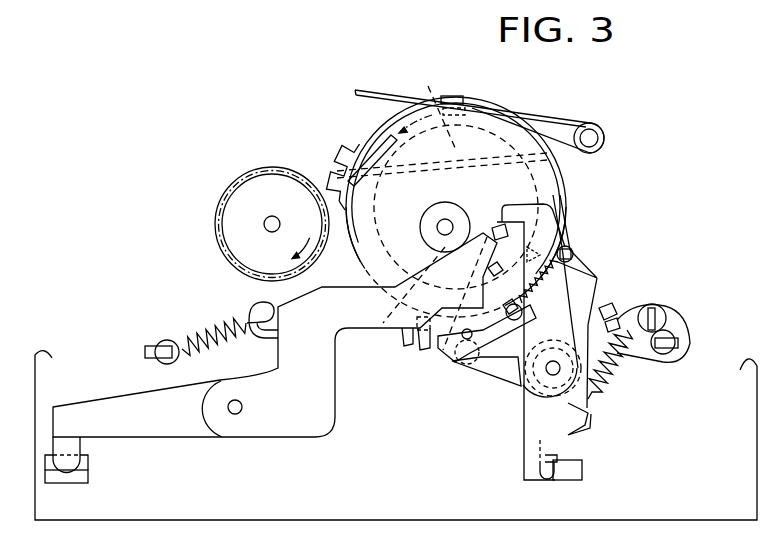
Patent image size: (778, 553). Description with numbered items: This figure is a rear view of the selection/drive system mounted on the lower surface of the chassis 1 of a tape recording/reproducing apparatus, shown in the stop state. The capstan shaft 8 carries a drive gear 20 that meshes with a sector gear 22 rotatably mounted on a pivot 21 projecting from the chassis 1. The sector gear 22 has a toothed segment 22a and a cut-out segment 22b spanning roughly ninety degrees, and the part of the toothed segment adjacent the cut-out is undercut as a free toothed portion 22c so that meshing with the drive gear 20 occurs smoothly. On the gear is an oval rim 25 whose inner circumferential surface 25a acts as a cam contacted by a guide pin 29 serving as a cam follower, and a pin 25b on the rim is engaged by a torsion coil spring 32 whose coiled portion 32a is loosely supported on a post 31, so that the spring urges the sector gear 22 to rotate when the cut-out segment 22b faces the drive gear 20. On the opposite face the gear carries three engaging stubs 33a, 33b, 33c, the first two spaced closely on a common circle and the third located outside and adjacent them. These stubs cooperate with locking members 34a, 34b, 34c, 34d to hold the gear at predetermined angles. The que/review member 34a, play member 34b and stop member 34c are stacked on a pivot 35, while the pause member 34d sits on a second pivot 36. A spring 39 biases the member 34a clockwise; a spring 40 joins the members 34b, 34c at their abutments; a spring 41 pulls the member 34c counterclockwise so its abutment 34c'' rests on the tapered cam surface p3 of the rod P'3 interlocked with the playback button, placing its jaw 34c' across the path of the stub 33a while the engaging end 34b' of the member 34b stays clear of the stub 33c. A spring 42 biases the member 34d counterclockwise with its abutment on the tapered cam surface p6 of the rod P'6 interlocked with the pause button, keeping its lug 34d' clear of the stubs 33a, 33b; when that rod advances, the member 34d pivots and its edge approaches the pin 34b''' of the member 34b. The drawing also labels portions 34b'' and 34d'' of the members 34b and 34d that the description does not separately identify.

The chassis 1 is at (724, 506).
The capstan shaft 8 is at (268, 222).
The drive gear 20 is at (222, 252).
The pivot 21 is at (448, 225).
The sector gear 22 is at (495, 142).
The toothed segment 22a is at (567, 196).
The cut-out segment 22b is at (373, 222).
The free toothed portion 22c is at (341, 155).
The oval rim 25 is at (452, 122).
The inner circumferential surface 25a is at (334, 188).
The pin 25b is at (372, 145).
The guide pin 29 is at (414, 350).
The post 31 is at (596, 140).
The torsion coil spring 32 is at (377, 95).
The coiled portion 32a is at (582, 128).
The first engaging stub 33a is at (526, 236).
The second engaging stub 33b is at (560, 266).
The third engaging stub 33c is at (576, 258).
The locking member for que/review operation 34a is at (681, 345).
The locking member for play operation 34b is at (545, 315).
The engaging end 34b' is at (432, 374).
The lever lug 34b'' is at (486, 381).
The pin 34b''' is at (466, 371).
The locking member for stop operation 34c is at (611, 418).
The jaw 34c' is at (562, 241).
The abutment 34c'' is at (590, 448).
The locking member for pause operation 34d is at (275, 355).
The lug 34d' is at (388, 338).
The lever pin 34d'' is at (105, 455).
The pivot 35 is at (549, 373).
The pivot 36 is at (235, 414).
The spring 39 is at (652, 304).
The spring 40 is at (603, 308).
The spring 41 is at (620, 357).
The spring 42 is at (220, 327).
The tapered cam surface p3 is at (545, 479).
The rod P'3 is at (595, 477).
The tapered cam surface p6 is at (88, 463).
The rod P'6 is at (66, 493).